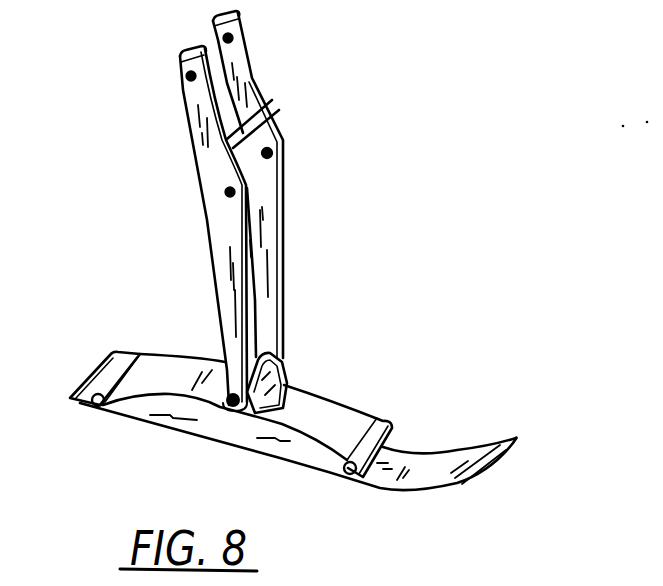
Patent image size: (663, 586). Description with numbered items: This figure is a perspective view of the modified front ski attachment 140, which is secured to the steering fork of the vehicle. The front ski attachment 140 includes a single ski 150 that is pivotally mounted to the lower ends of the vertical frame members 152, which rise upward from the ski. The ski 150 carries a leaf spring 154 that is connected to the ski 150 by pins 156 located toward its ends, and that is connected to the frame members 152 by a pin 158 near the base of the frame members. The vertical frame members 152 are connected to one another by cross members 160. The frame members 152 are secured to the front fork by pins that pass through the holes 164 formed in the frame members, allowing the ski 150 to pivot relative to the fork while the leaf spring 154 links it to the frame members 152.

The front ski attachment 140 is at (305, 268).
The ski 150 is at (427, 457).
The vertical frame members 152 is at (250, 322).
The leaf spring 154 is at (320, 405).
The pins 156 is at (86, 402).
The pin 158 is at (230, 410).
The cross members 160 is at (212, 265).
The holes 164 is at (188, 77).